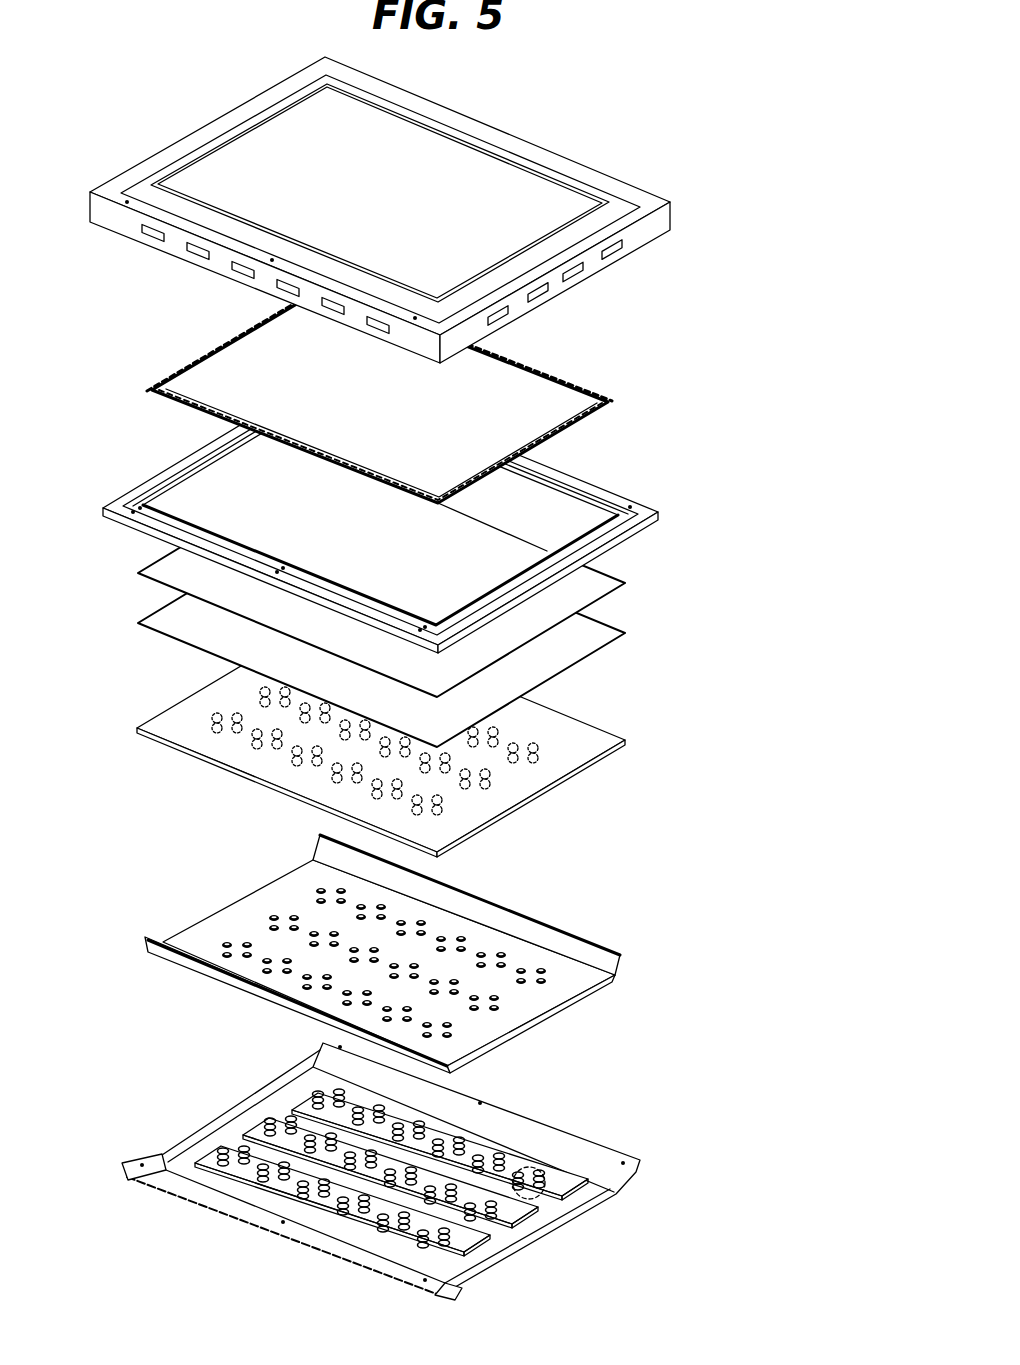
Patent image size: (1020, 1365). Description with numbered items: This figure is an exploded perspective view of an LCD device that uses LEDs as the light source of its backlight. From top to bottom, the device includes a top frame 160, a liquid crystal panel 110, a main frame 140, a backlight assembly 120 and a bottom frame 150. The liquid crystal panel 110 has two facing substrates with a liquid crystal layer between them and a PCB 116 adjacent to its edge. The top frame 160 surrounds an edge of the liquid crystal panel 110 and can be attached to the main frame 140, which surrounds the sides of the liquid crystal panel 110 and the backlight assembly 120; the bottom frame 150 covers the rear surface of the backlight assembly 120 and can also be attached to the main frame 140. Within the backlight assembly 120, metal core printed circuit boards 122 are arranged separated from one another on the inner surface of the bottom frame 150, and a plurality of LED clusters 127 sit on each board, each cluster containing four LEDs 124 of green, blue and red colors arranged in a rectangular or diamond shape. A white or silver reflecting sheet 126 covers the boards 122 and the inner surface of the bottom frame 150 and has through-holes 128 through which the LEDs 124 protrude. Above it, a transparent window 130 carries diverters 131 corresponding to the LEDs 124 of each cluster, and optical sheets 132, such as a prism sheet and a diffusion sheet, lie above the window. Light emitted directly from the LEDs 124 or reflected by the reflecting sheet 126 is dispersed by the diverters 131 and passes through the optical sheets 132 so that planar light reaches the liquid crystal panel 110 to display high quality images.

The liquid crystal panel 110 is at (530, 385).
The PCB 116 is at (500, 352).
The backlight assembly 120 is at (725, 1090).
The metal core printed circuit boards 122 is at (560, 1177).
The LEDs 124 is at (537, 1170).
The reflecting sheet 126 is at (540, 1005).
The LED clusters 127 is at (540, 1195).
The through-holes 128 is at (545, 966).
The transparent window 130 is at (594, 767).
The diverters 131 is at (490, 782).
The optical sheets 132 is at (661, 579).
The main frame 140 is at (652, 514).
The bottom frame 150 is at (618, 1185).
The top frame 160 is at (672, 217).